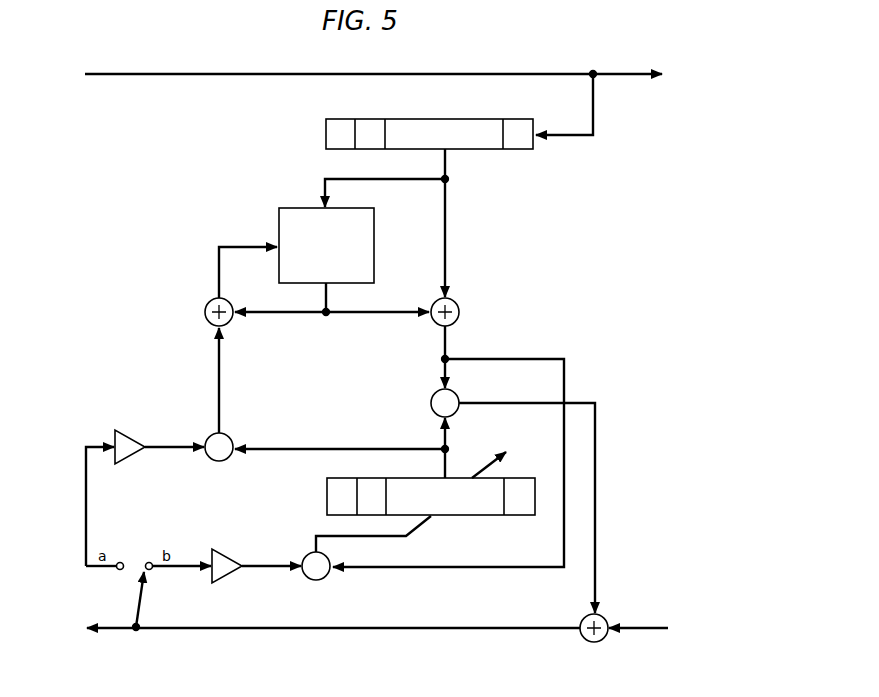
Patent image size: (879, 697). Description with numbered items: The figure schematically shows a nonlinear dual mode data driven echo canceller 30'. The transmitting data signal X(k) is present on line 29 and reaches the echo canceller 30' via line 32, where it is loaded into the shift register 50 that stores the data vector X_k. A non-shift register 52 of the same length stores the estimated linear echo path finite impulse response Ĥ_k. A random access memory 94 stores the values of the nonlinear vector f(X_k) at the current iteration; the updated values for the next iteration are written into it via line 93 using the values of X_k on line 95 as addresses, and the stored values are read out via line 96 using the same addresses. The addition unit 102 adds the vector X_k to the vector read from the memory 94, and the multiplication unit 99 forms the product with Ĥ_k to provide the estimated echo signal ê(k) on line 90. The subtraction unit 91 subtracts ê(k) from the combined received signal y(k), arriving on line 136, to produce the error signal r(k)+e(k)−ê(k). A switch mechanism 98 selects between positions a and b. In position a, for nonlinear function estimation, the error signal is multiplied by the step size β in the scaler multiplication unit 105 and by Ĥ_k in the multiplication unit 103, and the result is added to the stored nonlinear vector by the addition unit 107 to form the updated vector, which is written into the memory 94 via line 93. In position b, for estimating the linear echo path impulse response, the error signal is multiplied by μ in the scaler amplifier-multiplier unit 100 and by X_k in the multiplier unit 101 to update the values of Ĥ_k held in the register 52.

The line 29 is at (131, 73).
The line 32 is at (594, 100).
The shift register 50 is at (485, 150).
The line 95 is at (323, 179).
The line 93 is at (218, 262).
The random access memory 94 is at (376, 247).
The addition unit 107 is at (208, 300).
The line 96 is at (331, 295).
The addition unit 102 is at (455, 300).
The nonlinear dual mode echo canceller 30' is at (580, 227).
The multiplication unit 99 is at (434, 392).
The line 90 is at (574, 402).
The scaler multiplication unit 105 is at (131, 437).
The multiplication unit 103 is at (232, 436).
The scaler amplifier-multiplier unit 100 is at (225, 549).
The multiplier unit 101 is at (303, 553).
The non-shift register 52 is at (478, 517).
The switch mechanism 98 is at (142, 600).
The subtraction unit 91 is at (587, 642).
The received signal input line 136 is at (648, 630).